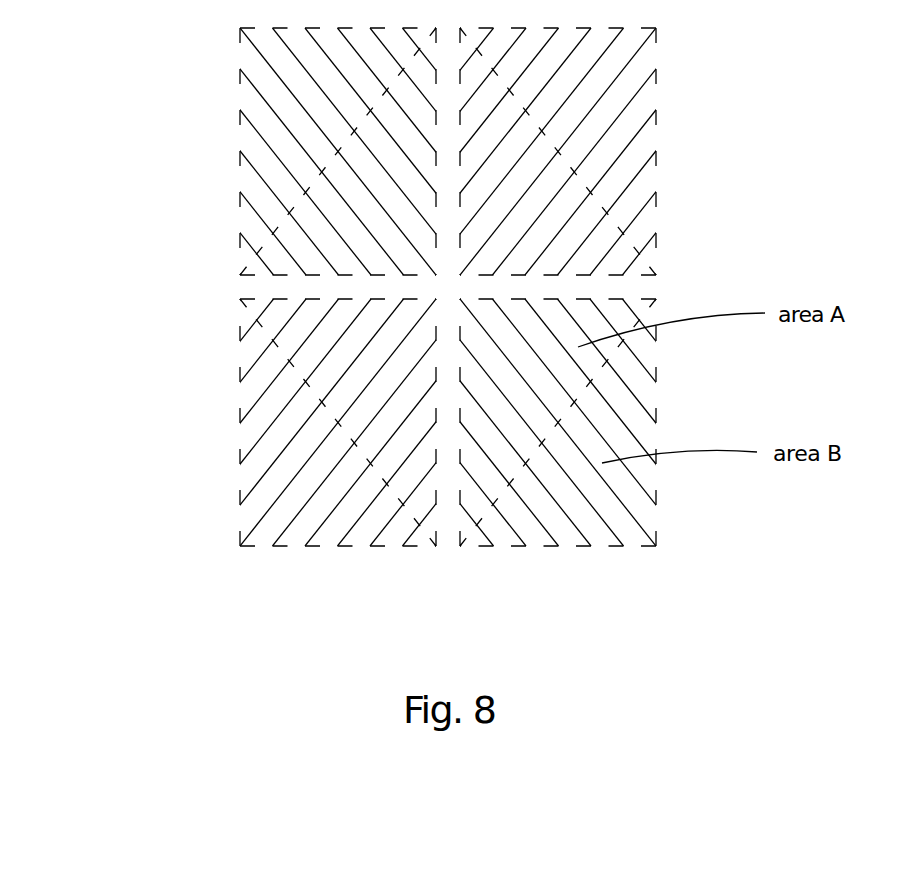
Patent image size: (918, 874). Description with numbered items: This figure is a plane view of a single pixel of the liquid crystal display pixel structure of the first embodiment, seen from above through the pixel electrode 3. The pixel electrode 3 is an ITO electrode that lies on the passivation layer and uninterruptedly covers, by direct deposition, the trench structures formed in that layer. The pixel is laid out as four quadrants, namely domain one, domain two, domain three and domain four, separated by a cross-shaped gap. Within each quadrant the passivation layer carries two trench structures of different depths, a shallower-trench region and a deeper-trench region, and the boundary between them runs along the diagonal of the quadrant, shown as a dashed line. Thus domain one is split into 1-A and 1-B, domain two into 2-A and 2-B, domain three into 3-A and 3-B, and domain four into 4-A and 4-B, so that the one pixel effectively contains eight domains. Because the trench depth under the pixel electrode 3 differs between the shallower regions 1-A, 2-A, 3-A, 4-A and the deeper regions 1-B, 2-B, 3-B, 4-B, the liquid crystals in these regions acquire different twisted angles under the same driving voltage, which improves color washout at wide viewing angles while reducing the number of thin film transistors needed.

The pixel electrode 3 is at (437, 287).
The area A of domain 1 1-A is at (338, 151).
The area B of domain 1 1-B is at (338, 151).
The area A of domain 2 2-A is at (558, 151).
The area B of domain 2 2-B is at (558, 151).
The area A of domain 3 3-A is at (338, 422).
The area B of domain 3 3-B is at (338, 422).
The area A of domain 4 4-A is at (558, 422).
The area B of domain 4 4-B is at (558, 422).